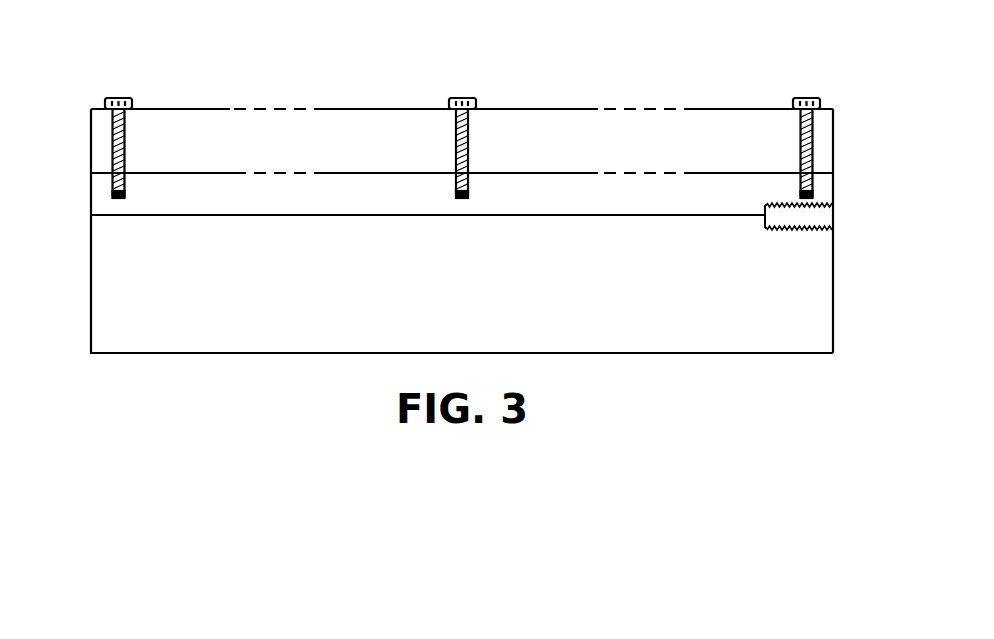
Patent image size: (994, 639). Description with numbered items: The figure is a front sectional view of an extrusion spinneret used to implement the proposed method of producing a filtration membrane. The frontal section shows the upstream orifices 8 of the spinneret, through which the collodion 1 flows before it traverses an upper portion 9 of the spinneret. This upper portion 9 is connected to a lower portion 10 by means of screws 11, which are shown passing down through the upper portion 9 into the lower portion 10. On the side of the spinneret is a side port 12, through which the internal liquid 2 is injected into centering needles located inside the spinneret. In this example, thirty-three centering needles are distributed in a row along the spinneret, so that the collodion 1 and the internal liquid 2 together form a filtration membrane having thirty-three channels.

The collodion 1 is at (290, 83).
The internal liquid 2 is at (847, 225).
The upstream orifices 8 is at (258, 142).
The upper portion 9 is at (199, 141).
The lower portion 10 is at (123, 298).
The screws 11 is at (113, 98).
The side port 12 is at (822, 213).